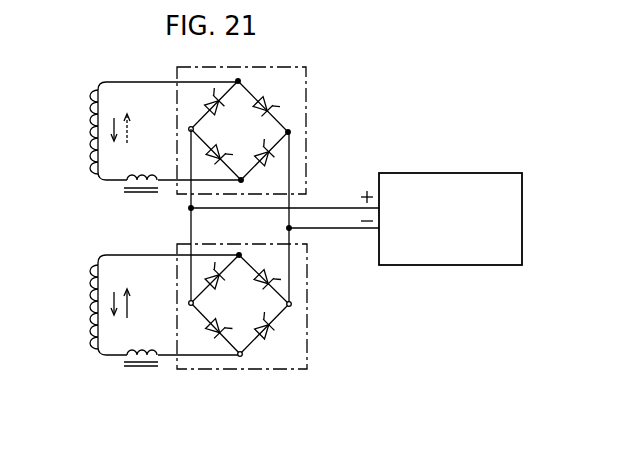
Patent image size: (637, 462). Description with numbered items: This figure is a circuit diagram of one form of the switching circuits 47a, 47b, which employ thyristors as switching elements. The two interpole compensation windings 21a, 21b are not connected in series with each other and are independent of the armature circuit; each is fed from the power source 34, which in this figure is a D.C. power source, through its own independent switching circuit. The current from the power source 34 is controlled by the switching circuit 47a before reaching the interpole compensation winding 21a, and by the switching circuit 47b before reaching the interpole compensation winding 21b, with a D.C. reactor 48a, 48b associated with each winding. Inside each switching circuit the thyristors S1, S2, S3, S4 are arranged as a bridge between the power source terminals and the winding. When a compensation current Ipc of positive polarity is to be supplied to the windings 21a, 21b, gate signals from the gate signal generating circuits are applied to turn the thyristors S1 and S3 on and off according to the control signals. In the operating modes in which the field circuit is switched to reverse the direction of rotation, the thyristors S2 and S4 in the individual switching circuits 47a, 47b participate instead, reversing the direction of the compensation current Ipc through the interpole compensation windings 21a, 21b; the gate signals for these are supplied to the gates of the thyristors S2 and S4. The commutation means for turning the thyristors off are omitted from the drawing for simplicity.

The interpole compensation winding 21a is at (88, 142).
The interpole compensation winding 21b is at (88, 321).
The switching circuit 47a is at (267, 213).
The switching circuit 47b is at (307, 288).
The D.C. reactor 48a is at (155, 200).
The D.C. reactor 48b is at (155, 376).
The power source 34 is at (471, 173).
The thyristor S1 is at (213, 195).
The thyristor S2 is at (213, 237).
The thyristor S3 is at (272, 249).
The thyristor S4 is at (271, 184).